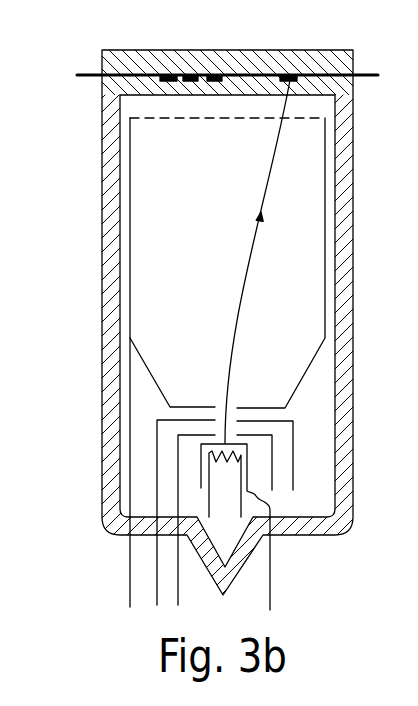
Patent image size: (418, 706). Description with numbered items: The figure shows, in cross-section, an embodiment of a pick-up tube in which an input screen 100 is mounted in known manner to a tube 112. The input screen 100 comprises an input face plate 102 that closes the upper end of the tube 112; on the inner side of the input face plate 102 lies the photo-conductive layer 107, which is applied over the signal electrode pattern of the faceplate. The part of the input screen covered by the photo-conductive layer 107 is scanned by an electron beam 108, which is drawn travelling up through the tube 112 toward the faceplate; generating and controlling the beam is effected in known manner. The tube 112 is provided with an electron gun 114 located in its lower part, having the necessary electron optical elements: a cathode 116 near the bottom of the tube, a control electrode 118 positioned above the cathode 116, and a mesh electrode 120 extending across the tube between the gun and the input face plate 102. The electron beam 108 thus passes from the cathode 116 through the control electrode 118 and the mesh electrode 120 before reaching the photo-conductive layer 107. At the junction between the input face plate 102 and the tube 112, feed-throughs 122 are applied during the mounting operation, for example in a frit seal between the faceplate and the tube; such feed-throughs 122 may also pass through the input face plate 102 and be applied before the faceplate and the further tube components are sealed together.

The input screen 100 is at (97, 49).
The input face plate 102 is at (308, 57).
The photo-conductive layer 107 is at (246, 85).
The electron beam 108 is at (254, 240).
The tube 112 is at (344, 206).
The electron gun 114 is at (300, 429).
The cathode 116 is at (205, 444).
The control electrode 118 is at (185, 419).
The mesh electrode 120 is at (208, 120).
The feed-throughs 122 is at (87, 77).